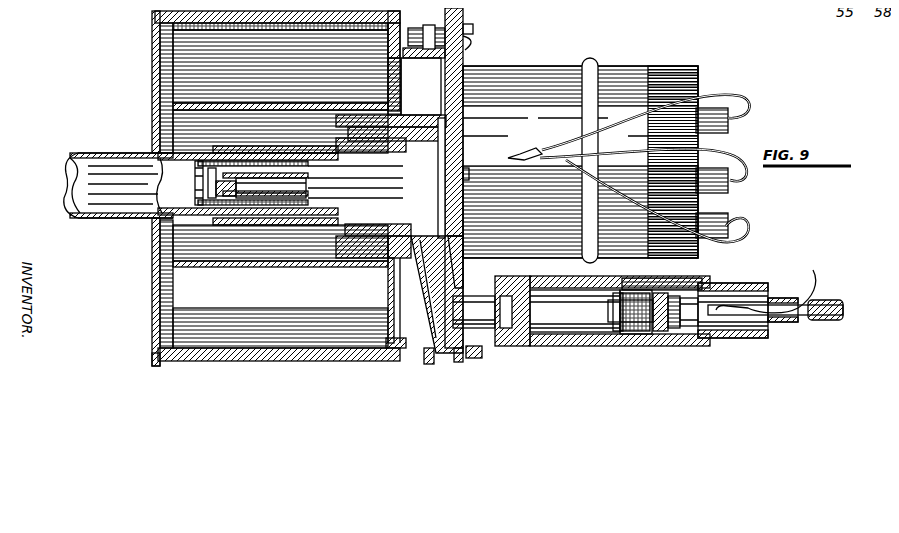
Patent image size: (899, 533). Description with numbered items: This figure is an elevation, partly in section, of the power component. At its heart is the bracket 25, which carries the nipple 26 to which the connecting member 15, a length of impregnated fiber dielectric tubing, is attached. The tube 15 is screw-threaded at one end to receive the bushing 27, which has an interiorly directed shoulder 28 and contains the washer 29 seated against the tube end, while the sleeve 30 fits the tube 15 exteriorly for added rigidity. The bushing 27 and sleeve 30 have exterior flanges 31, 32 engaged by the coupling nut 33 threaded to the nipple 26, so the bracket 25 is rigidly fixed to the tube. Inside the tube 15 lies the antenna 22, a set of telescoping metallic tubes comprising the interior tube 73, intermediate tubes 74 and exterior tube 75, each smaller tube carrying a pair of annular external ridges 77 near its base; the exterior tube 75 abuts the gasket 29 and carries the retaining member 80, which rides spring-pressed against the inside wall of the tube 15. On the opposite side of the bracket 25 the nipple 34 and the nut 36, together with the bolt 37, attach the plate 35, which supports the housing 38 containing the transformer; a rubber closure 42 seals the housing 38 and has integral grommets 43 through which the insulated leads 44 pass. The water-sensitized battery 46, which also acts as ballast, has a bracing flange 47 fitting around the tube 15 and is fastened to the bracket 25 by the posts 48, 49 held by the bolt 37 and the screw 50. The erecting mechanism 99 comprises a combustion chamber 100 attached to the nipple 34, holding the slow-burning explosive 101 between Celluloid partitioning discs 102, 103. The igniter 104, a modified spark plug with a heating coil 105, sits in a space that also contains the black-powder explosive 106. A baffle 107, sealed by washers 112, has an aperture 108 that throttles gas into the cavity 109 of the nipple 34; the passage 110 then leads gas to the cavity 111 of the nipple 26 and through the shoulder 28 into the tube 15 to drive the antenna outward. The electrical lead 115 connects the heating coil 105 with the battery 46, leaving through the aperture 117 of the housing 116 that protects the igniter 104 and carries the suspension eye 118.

The connecting member 15 is at (92, 205).
The antenna 22 is at (298, 155).
The bracket 25 is at (432, 294).
The nipple 26 is at (402, 127).
The bushing 27 is at (368, 250).
The shoulder 28 is at (455, 150).
The washer 29 is at (452, 134).
The sleeve 30 is at (290, 212).
The flange 31 is at (346, 250).
The flange 32 is at (330, 250).
The coupling nut 33 is at (350, 107).
The nipple 34 is at (473, 351).
The plate 35 is at (457, 20).
The nut 36 is at (451, 355).
The bolt 37 is at (462, 36).
The housing 38 is at (548, 68).
The closure 42 is at (658, 70).
The grommets 43 is at (715, 192).
The leads 44 is at (725, 88).
The battery 46 is at (270, 350).
The bracing flange 47 is at (150, 110).
The post 48 is at (394, 42).
The post 49 is at (394, 340).
The screw 50 is at (420, 357).
The interior tube 73 is at (262, 197).
The intermediate tubes 74 is at (222, 197).
The exterior tube 75 is at (198, 197).
The annular external ridges 77 is at (263, 158).
The retaining member 80 is at (432, 262).
The antenna erecting mechanism 99 is at (546, 338).
The combustion chamber 100 is at (566, 308).
The explosive 101 is at (622, 326).
The partitioning disc 102 is at (637, 320).
The partitioning disc 103 is at (603, 340).
The igniter 104 is at (682, 320).
The heating coil 105 is at (660, 326).
The explosive 106 is at (634, 276).
The baffle 107 is at (520, 340).
The aperture 108 is at (575, 311).
The cavity 109 is at (474, 312).
The passage 110 is at (428, 290).
The cavity 111 is at (461, 168).
The washers 112 is at (497, 340).
The electrical lead 115 is at (725, 310).
The housing 116 is at (729, 280).
The aperture 117 is at (767, 314).
The suspension eye 118 is at (806, 314).